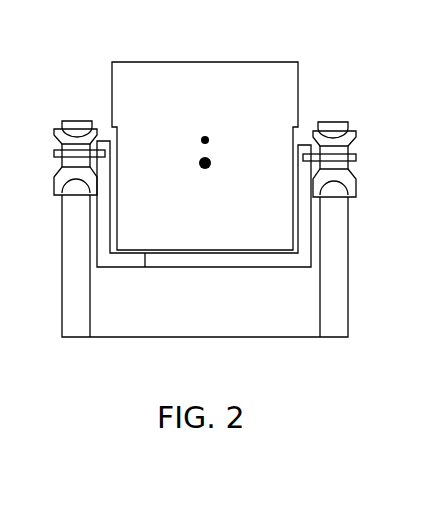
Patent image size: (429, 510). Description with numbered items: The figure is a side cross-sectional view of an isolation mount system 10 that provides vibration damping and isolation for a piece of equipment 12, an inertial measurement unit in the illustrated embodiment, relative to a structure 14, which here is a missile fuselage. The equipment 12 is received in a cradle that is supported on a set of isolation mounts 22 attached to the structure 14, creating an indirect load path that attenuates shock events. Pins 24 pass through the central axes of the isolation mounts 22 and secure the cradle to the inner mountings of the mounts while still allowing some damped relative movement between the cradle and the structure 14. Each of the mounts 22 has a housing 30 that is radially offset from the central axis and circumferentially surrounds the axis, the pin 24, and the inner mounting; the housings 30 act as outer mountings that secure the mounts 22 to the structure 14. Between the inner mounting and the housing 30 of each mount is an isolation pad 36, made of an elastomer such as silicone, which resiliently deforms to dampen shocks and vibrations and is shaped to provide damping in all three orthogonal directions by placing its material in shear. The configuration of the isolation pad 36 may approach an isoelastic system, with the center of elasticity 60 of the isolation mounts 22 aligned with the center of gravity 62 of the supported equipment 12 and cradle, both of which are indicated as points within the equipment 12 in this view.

The isolation mount system 10 is at (75, 75).
The equipment 12 is at (296, 82).
The structure 14 is at (333, 248).
The isolation mounts 22 is at (78, 121).
The pins 24 is at (70, 153).
The housing 30 is at (334, 188).
The isolation pad 36 is at (350, 181).
The center of elasticity 60 is at (205, 136).
The center of gravity 62 is at (205, 170).